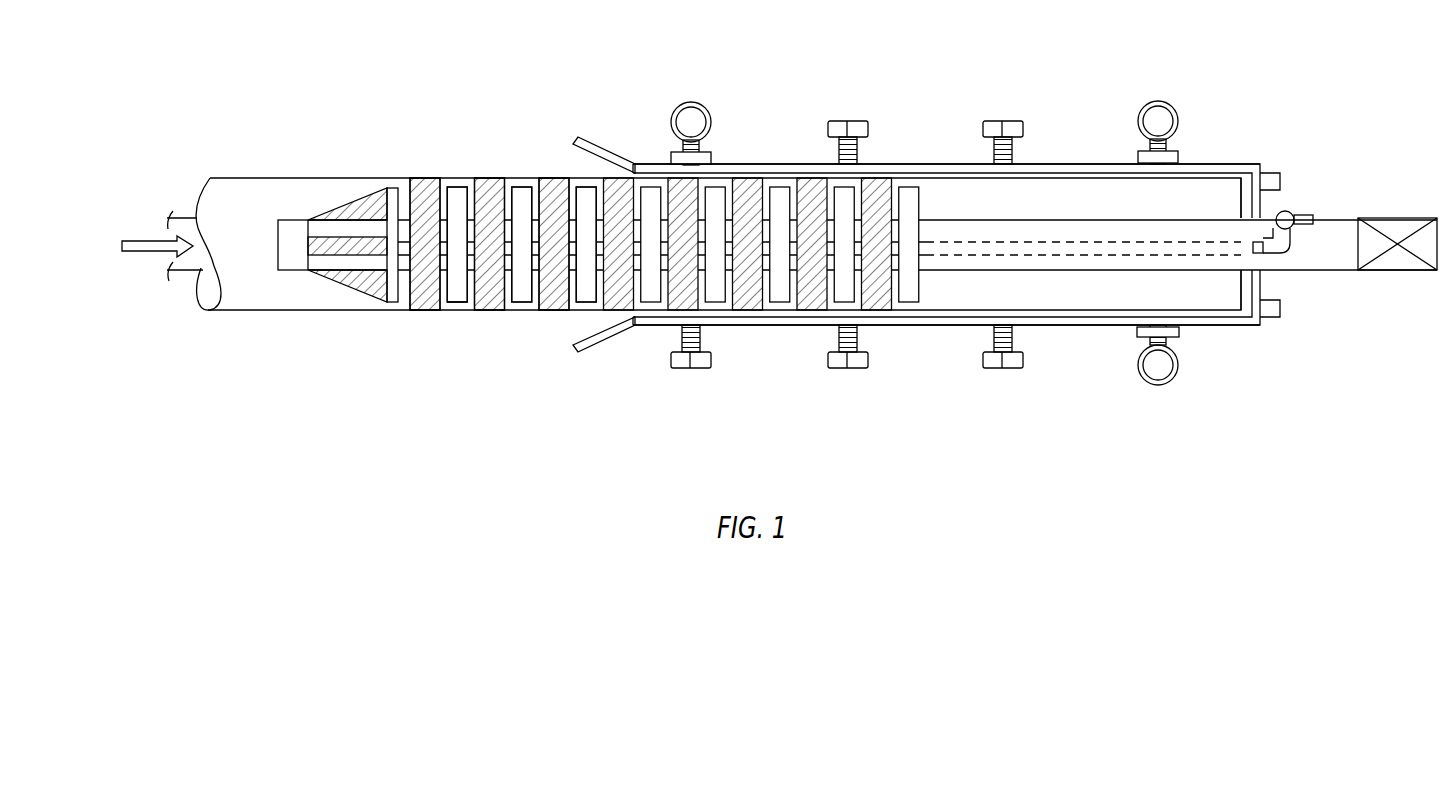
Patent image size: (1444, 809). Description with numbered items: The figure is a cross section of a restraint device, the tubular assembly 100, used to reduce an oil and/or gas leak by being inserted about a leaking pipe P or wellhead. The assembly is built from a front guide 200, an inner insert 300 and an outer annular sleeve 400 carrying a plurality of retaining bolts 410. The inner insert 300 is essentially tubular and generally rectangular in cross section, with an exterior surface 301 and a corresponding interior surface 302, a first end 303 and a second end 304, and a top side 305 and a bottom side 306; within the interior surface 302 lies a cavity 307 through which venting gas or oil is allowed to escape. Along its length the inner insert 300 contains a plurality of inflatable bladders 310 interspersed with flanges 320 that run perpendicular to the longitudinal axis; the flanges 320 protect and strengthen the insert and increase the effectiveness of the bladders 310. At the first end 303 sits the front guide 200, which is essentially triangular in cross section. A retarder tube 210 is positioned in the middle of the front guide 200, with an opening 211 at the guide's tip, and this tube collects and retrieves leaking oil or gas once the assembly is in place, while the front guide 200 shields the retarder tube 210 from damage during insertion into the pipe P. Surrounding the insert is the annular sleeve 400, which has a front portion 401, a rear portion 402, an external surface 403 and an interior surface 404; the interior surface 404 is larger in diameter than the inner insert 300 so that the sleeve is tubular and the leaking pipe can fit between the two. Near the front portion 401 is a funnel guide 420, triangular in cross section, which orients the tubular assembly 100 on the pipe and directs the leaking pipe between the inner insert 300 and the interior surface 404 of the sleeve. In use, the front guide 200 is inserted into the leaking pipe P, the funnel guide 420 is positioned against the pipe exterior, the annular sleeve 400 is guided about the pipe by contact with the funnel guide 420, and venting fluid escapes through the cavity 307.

The leaking pipe P is at (226, 171).
The tubular assembly 100 is at (766, 156).
The front guide 200 is at (338, 207).
The retarder tube 210 is at (336, 264).
The opening 211 is at (292, 254).
The inner insert 300 is at (481, 326).
The exterior surface 301 is at (457, 177).
The interior surface 302 is at (482, 177).
The first end 303 is at (407, 177).
The second end 304 is at (1223, 290).
The top side 305 is at (515, 177).
The bottom side 306 is at (425, 303).
The cavity 307 is at (453, 306).
The inflatable bladders 310 is at (543, 311).
The flanges 320 is at (583, 303).
The annular sleeve 400 is at (973, 198).
The front portion 401 is at (640, 163).
The rear portion 402 is at (1241, 163).
The external surface 403 is at (1050, 326).
The interior surface 404 is at (1043, 186).
The retaining bolts 410 is at (836, 120).
The funnel guide 420 is at (620, 357).